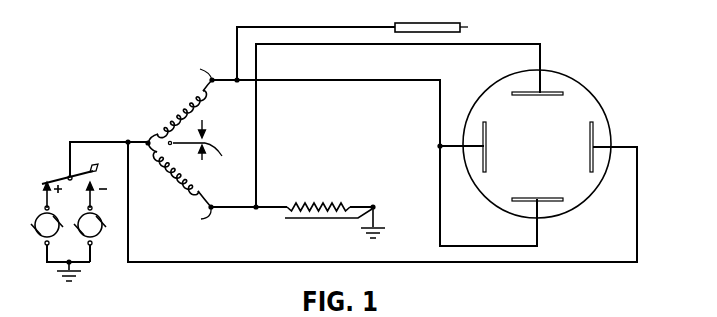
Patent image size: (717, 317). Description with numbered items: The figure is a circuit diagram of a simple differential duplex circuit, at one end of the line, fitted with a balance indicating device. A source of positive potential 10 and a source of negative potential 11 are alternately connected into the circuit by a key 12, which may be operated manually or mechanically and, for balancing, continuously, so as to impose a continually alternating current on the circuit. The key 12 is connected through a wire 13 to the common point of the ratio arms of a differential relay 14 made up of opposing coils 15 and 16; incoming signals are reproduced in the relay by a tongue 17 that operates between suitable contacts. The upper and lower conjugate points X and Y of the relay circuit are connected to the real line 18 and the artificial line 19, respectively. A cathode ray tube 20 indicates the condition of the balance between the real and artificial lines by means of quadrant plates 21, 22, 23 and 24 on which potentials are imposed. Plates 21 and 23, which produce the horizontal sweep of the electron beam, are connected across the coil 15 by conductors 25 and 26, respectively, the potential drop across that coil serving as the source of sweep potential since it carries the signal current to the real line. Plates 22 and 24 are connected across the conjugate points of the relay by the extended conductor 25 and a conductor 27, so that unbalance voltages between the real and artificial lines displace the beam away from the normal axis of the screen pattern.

The source of positive potential 10 is at (44, 210).
The source of negative potential 11 is at (94, 237).
The key 12 is at (63, 180).
The wire 13 is at (90, 140).
The differential relay 14 is at (229, 119).
The coil 15 is at (178, 104).
The coil 16 is at (183, 190).
The tongue 17 is at (222, 157).
The real line 18 is at (237, 38).
The artificial line 19 is at (305, 205).
The cathode ray tube 20 is at (607, 117).
The plate 21 is at (483, 130).
The plate 22 is at (553, 92).
The plate 23 is at (594, 158).
The plate 24 is at (531, 203).
The conductor 25 is at (315, 81).
The conductor 26 is at (197, 262).
The conductor 27 is at (428, 45).